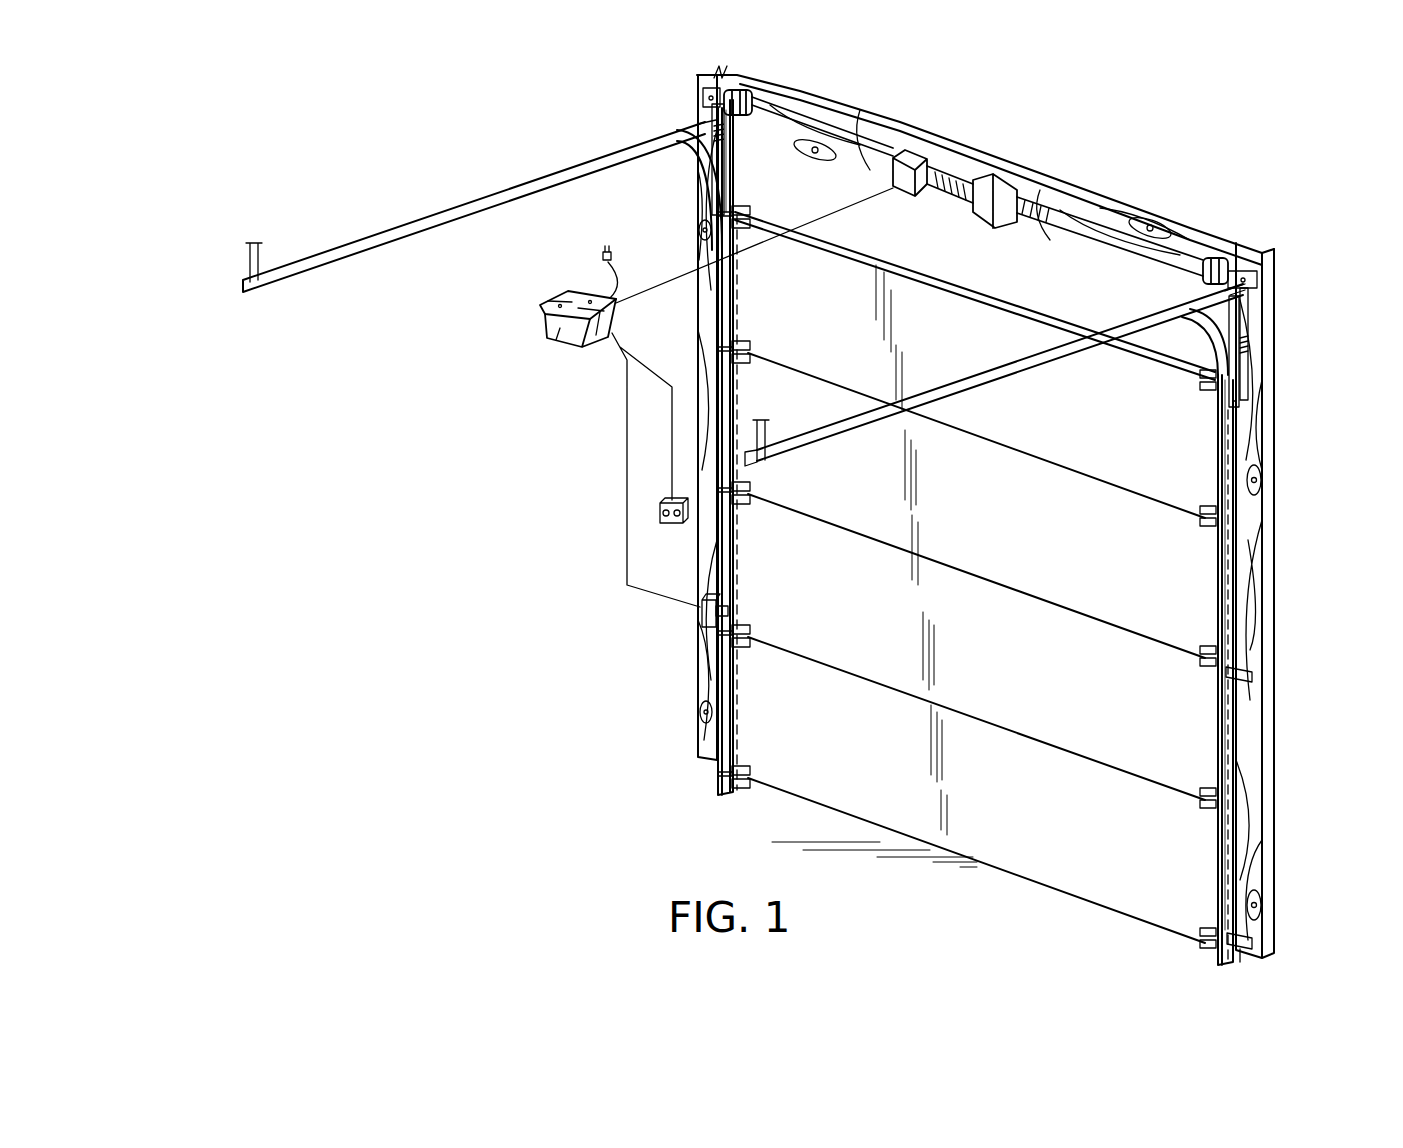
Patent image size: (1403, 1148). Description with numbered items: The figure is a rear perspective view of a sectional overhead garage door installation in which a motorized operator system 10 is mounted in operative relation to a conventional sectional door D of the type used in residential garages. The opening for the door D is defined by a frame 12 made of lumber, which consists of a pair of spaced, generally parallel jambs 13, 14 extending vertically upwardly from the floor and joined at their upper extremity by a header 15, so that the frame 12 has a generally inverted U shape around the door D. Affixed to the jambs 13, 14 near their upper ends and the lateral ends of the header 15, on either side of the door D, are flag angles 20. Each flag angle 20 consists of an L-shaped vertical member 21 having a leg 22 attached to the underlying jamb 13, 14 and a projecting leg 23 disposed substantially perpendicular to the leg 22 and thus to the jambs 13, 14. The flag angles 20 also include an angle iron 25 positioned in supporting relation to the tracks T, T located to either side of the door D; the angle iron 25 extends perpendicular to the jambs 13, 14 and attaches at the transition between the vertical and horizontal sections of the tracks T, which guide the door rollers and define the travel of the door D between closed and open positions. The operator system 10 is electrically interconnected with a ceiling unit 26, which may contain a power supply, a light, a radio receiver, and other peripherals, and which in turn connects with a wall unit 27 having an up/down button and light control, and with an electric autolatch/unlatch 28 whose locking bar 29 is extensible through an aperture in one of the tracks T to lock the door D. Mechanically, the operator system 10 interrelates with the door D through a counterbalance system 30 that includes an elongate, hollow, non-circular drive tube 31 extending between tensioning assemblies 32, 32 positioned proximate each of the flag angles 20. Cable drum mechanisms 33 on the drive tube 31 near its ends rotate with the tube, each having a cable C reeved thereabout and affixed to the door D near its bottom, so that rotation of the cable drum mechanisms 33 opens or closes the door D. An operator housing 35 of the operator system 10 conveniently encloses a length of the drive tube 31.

The motorized operator 10 is at (989, 152).
The frame 12 is at (1273, 555).
The jamb 13 is at (1257, 790).
The jamb 14 is at (703, 686).
The header 15 is at (1202, 242).
The flag angle 20 is at (711, 128).
The L-shaped vertical member 21 is at (1250, 343).
The leg 22 is at (1245, 318).
The projecting leg 23 is at (697, 165).
The angle iron 25 is at (630, 145).
The ceiling unit 26 is at (545, 339).
The wall unit 27 is at (660, 510).
The electric autolatch/unlatch 28 is at (702, 620).
The locking bar 29 is at (727, 614).
The counterbalance system 30 is at (1068, 210).
The drive tube 31 is at (1137, 232).
The tensioning assembly 32 is at (704, 90).
The cable drum mechanism 33 is at (753, 97).
The operator housing 35 is at (916, 150).
The cable C is at (742, 185).
The track T is at (410, 235).
The sectional door D is at (1013, 843).